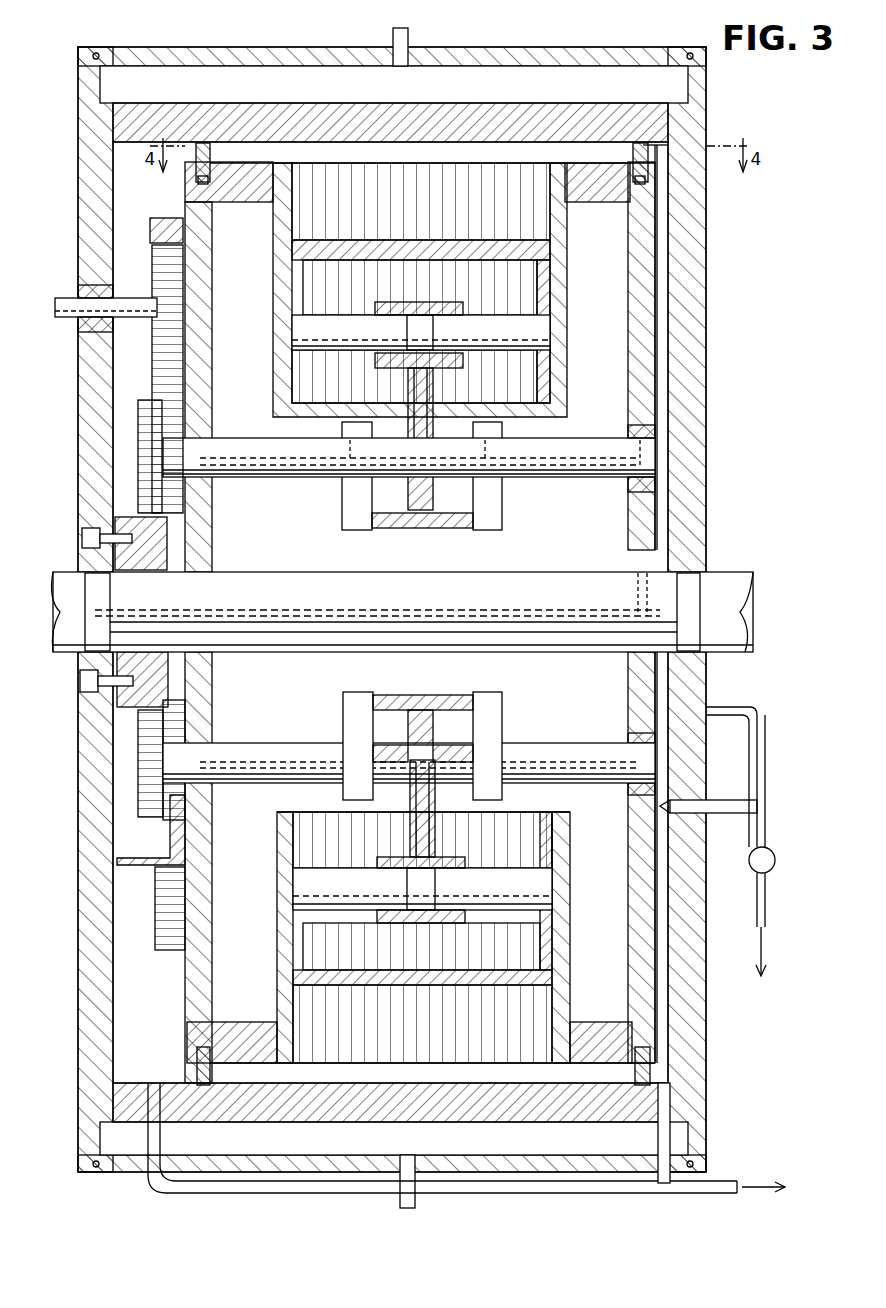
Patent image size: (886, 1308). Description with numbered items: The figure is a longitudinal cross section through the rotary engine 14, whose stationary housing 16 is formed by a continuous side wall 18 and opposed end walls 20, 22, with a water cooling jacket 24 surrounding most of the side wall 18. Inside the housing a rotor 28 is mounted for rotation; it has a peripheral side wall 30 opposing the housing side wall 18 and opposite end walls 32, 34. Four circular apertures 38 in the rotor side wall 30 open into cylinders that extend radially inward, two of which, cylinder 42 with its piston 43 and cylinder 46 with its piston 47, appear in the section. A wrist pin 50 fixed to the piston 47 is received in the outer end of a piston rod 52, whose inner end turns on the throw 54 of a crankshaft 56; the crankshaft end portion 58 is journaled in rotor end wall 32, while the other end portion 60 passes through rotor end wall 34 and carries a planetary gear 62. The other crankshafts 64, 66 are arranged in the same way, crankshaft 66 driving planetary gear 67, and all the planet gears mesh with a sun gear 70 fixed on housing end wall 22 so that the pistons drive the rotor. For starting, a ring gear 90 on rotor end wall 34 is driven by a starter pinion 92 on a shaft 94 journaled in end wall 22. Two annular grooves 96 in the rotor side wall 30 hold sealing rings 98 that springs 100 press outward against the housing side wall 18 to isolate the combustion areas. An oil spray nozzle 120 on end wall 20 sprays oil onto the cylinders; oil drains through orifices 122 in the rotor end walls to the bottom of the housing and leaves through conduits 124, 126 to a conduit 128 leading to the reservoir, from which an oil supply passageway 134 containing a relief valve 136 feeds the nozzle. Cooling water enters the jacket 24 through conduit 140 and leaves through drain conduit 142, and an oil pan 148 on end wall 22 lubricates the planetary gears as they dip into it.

The rotary engine 14 is at (402, 612).
The stationary housing 16 is at (708, 516).
The housing side wall 18 is at (456, 106).
The housing end wall 20 is at (705, 278).
The housing end wall 22 is at (80, 232).
The water cooling jacket 24 is at (190, 68).
The rotor 28 is at (658, 362).
The rotor side wall 30 is at (553, 170).
The rotor end wall 32 is at (656, 400).
The rotor end wall 34 is at (214, 384).
The circular apertures 38 is at (276, 216).
The cylinder 42 is at (560, 902).
The piston 43 is at (546, 852).
The cylinder 46 is at (560, 274).
The piston 47 is at (546, 370).
The wrist pin 50 is at (497, 315).
The piston rod 52 is at (436, 390).
The throw 54 is at (446, 470).
The crankshaft 56 is at (604, 442).
The crankshaft end portion 58 is at (616, 482).
The crankshaft end portion 60 is at (226, 444).
The planetary gear 62 is at (142, 410).
The crankshaft 64 is at (422, 774).
The crankshaft 66 is at (302, 744).
The planetary gear 67 is at (140, 742).
The sun gear 70 is at (170, 526).
The ring gear 90 is at (160, 224).
The starter pinion 92 is at (160, 272).
The starter pinion shaft 94 is at (68, 300).
The annular grooves 96 is at (198, 178).
The annular sealing ring 98 is at (204, 146).
The springs 100 is at (222, 203).
The oil spray nozzle 120 is at (734, 814).
The drain orifices 122 is at (206, 1010).
The conduit 124 is at (672, 1102).
The conduit 126 is at (222, 1193).
The conduit 128 is at (738, 1180).
The oil supply passageway 134 is at (768, 908).
The oil relief valve 136 is at (776, 858).
The water supply conduit 140 is at (408, 42).
The water drain conduit 142 is at (400, 1200).
The oil pan 148 is at (138, 860).